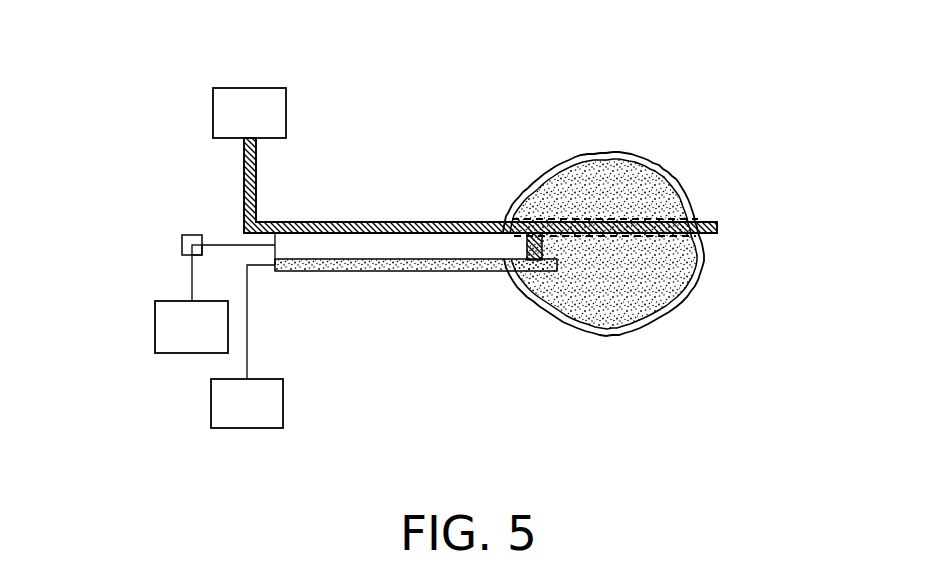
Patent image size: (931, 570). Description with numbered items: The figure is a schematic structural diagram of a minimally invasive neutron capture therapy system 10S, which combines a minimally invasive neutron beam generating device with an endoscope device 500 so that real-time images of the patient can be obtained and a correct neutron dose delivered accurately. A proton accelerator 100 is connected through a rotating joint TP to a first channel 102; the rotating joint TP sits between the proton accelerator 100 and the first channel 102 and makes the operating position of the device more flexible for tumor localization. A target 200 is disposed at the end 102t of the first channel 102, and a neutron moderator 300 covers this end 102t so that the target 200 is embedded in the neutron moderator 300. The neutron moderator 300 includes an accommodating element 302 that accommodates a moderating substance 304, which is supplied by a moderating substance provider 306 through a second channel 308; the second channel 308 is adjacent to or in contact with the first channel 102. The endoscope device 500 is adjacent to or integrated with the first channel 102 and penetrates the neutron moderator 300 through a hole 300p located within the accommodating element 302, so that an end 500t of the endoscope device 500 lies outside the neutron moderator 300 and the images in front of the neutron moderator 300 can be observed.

The minimally invasive neutron capture therapy system 10S is at (78, 47).
The endoscope device 500 is at (271, 128).
The rotating joint TP is at (184, 234).
The proton accelerator 100 is at (213, 340).
The moderating substance provider 306 is at (268, 418).
The first channel 102 is at (410, 230).
The end of the first channel 102t is at (517, 246).
The target 200 is at (511, 221).
The second channel 308 is at (413, 275).
The neutron moderator 300 is at (663, 244).
The hole 300p is at (673, 218).
The accommodating element 302 is at (683, 296).
The moderating substance 304 is at (688, 274).
The end of the endoscope device 500t is at (722, 212).